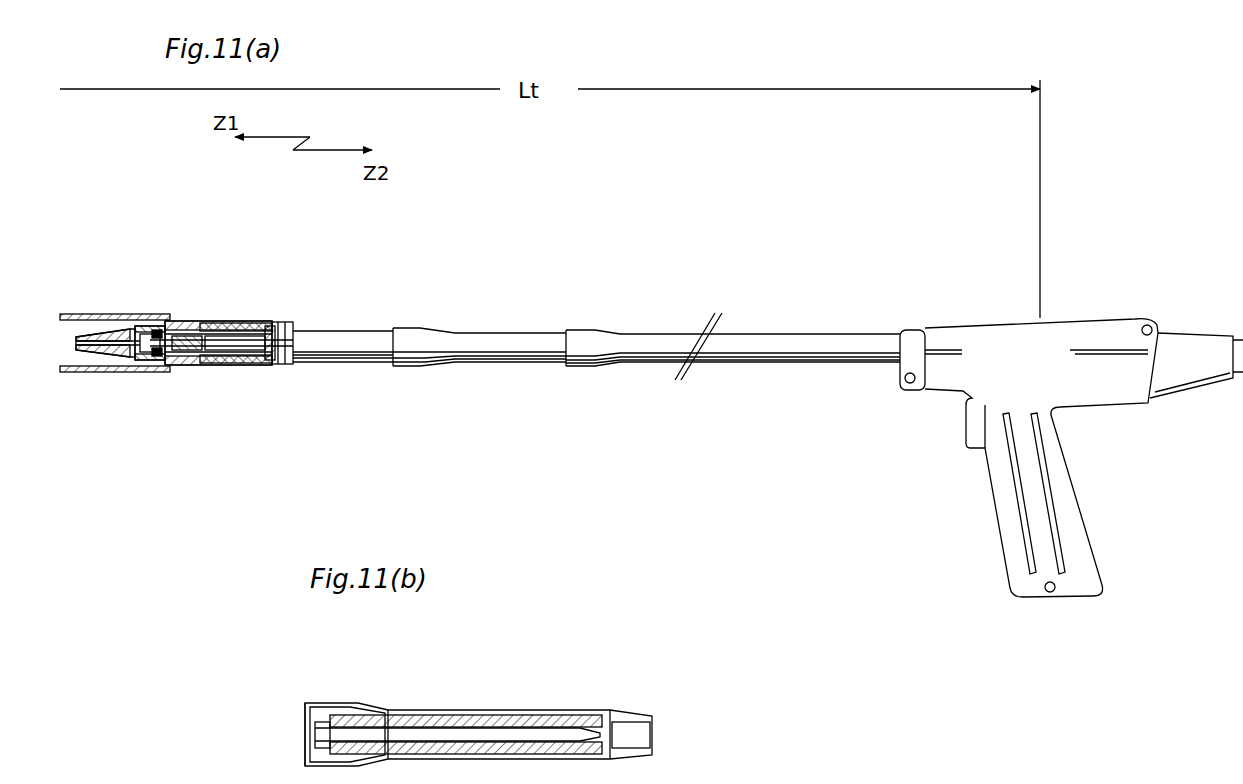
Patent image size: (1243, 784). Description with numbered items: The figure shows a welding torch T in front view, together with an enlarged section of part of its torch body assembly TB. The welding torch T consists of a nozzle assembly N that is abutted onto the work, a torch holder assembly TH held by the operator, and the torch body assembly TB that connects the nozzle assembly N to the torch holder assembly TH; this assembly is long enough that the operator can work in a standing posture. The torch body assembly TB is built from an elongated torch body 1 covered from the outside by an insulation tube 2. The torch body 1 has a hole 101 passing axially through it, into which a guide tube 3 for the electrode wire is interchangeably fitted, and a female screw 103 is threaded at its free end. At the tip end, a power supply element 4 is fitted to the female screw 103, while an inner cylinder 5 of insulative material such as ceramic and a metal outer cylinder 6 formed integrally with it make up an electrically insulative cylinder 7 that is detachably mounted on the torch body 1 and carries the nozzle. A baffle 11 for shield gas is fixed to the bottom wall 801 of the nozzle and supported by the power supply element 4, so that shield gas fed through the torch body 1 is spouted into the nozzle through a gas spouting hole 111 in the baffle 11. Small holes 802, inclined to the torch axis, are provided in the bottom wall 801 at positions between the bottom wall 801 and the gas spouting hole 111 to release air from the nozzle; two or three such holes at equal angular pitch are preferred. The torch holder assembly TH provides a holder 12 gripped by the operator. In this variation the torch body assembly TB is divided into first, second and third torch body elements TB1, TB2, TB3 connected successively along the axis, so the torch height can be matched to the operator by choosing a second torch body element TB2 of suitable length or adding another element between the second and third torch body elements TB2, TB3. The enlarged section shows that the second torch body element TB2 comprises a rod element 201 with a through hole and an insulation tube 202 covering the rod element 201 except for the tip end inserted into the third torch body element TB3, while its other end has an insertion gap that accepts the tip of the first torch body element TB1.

In FIG. 11A, the nozzle assembly N is at (84, 305).
In FIG. 11A, the power supply element 4 is at (113, 372).
In FIG. 11A, the guide tube 3 is at (76, 373).
In FIG. 11A, the gas spouting hole 111 is at (147, 375).
In FIG. 11A, the small hole 802 is at (160, 320).
In FIG. 11A, the bottom wall 801 is at (145, 320).
In FIG. 11A, the hole 101 is at (195, 318).
In FIG. 11A, the baffle 11 is at (175, 375).
In FIG. 11A, the female screw 103 is at (228, 375).
In FIG. 11A, the outer cylinder 6 is at (215, 318).
In FIG. 11A, the inner cylinder 5 is at (235, 318).
In FIG. 11A, the electrically insulative cylinder 7 is at (264, 293).
In FIG. 11A, the insulation tube 2 is at (270, 375).
In FIG. 11A, the elongated torch body 1 is at (260, 375).
In FIG. 11A, the first torch body element TB1 is at (380, 330).
In FIG. 11A, the second torch body element TB2 is at (535, 330).
In FIG. 11B, the second torch body element TB2 is at (478, 683).
In FIG. 11A, the third torch body element TB3 is at (620, 338).
In FIG. 11A, the torch body assembly TB is at (715, 155).
In FIG. 11A, the welding torch T is at (852, 418).
In FIG. 11A, the torch holder assembly TH is at (1118, 318).
In FIG. 11A, the holder 12 is at (1065, 505).
In FIG. 11B, the insulation tube 202 is at (423, 705).
In FIG. 11B, the rod element 201 is at (437, 720).